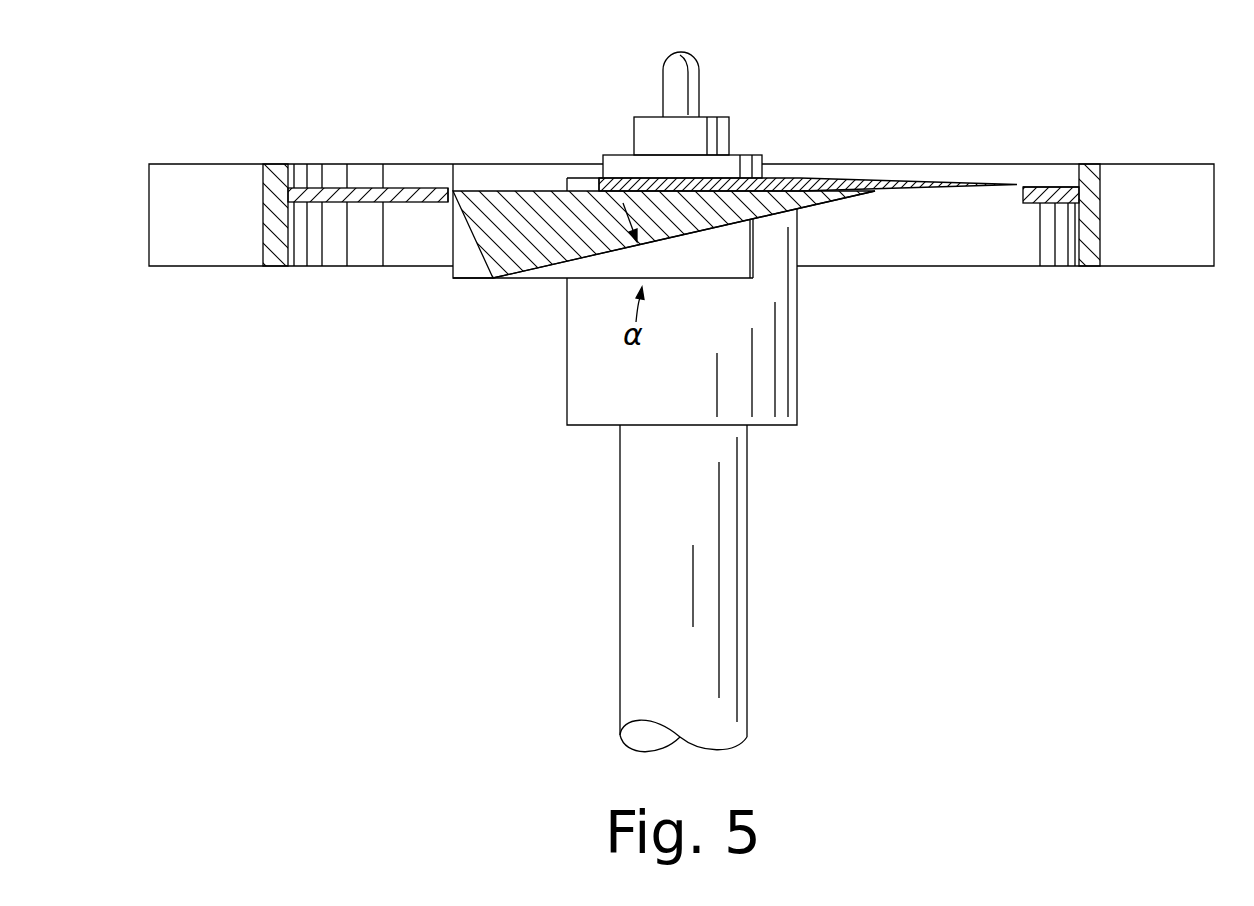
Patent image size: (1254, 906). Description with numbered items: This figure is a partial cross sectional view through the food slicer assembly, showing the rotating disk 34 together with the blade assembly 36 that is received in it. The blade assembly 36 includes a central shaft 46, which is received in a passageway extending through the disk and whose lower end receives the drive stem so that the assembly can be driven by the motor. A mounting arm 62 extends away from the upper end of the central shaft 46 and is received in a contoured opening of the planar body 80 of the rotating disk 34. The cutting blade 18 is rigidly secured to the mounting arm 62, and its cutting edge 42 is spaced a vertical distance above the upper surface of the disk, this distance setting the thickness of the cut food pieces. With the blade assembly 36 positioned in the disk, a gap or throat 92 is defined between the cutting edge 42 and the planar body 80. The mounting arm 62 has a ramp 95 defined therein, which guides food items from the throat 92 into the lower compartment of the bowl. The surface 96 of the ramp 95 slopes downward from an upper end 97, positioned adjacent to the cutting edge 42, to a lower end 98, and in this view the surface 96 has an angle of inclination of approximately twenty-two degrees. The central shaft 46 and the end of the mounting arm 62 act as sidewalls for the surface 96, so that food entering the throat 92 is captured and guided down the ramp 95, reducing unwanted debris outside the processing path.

The cutting blade 18 is at (897, 178).
The rotating disk 34 is at (1163, 300).
The blade assembly 36 is at (825, 456).
The cutting edge 42 is at (1020, 186).
The central shaft 46 is at (738, 250).
The mounting arm 62 is at (465, 253).
The planar body 80 is at (1052, 186).
The throat 92 is at (1025, 188).
The ramp 95 is at (500, 312).
The surface 96 is at (590, 270).
The upper end 97 is at (848, 205).
The lower end 98 is at (468, 280).